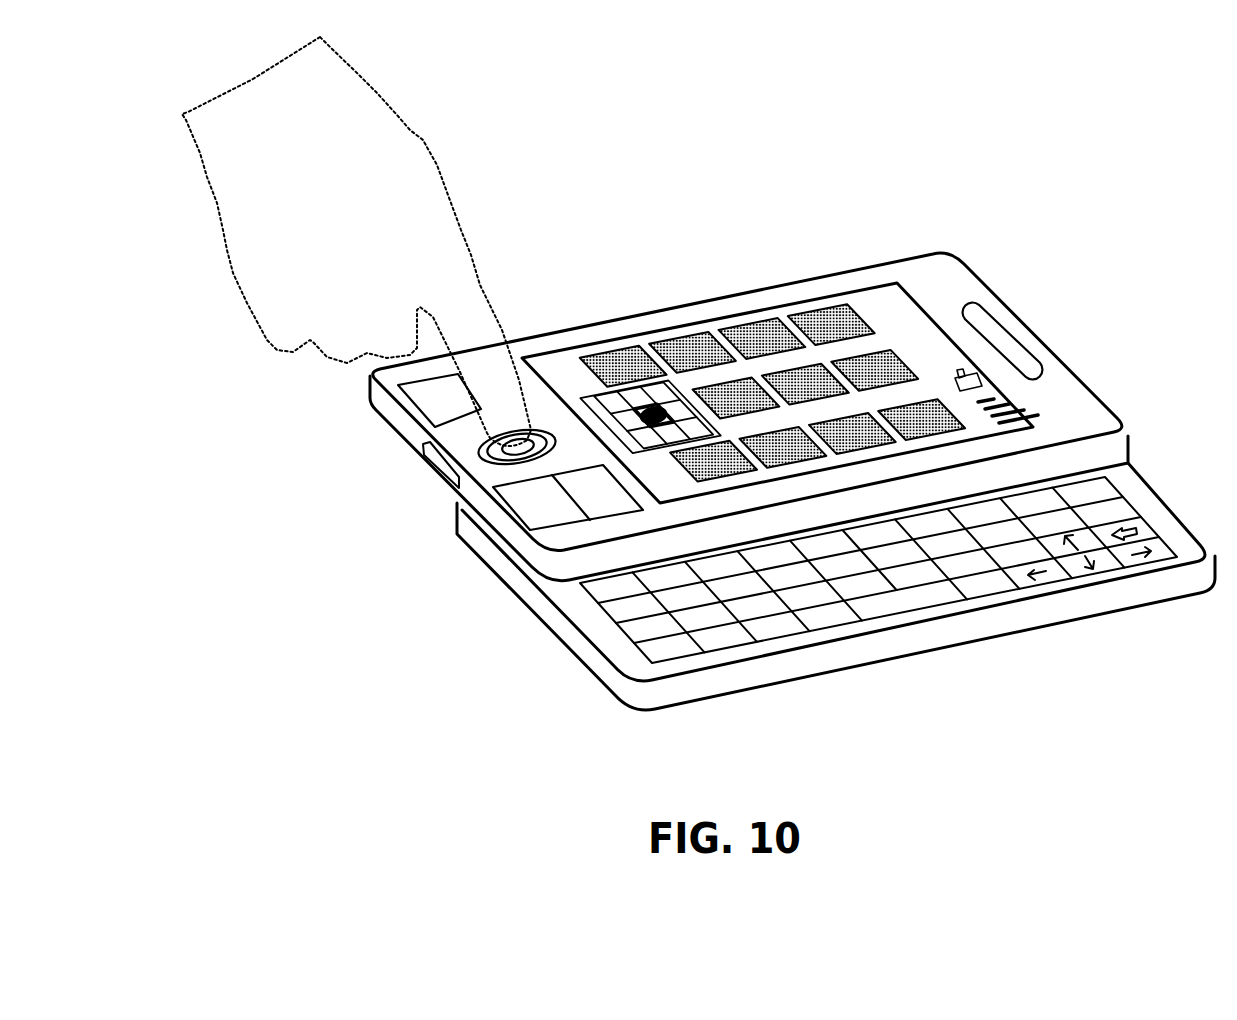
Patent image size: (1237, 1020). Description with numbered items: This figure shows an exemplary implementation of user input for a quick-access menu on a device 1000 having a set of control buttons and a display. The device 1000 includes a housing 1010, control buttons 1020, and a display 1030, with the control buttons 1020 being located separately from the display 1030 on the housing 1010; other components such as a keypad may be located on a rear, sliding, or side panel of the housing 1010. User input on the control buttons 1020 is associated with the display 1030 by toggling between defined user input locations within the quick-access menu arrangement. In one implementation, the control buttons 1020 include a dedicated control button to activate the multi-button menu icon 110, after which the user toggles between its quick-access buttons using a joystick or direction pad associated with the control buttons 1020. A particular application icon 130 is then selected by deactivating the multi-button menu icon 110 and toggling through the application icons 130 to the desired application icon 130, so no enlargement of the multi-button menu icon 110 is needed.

The device 1000 is at (760, 402).
The housing 1010 is at (716, 387).
The control buttons 1020 is at (435, 413).
The display 1030 is at (771, 369).
The application icon 130 is at (673, 338).
The multi-button menu icon 110 is at (578, 403).